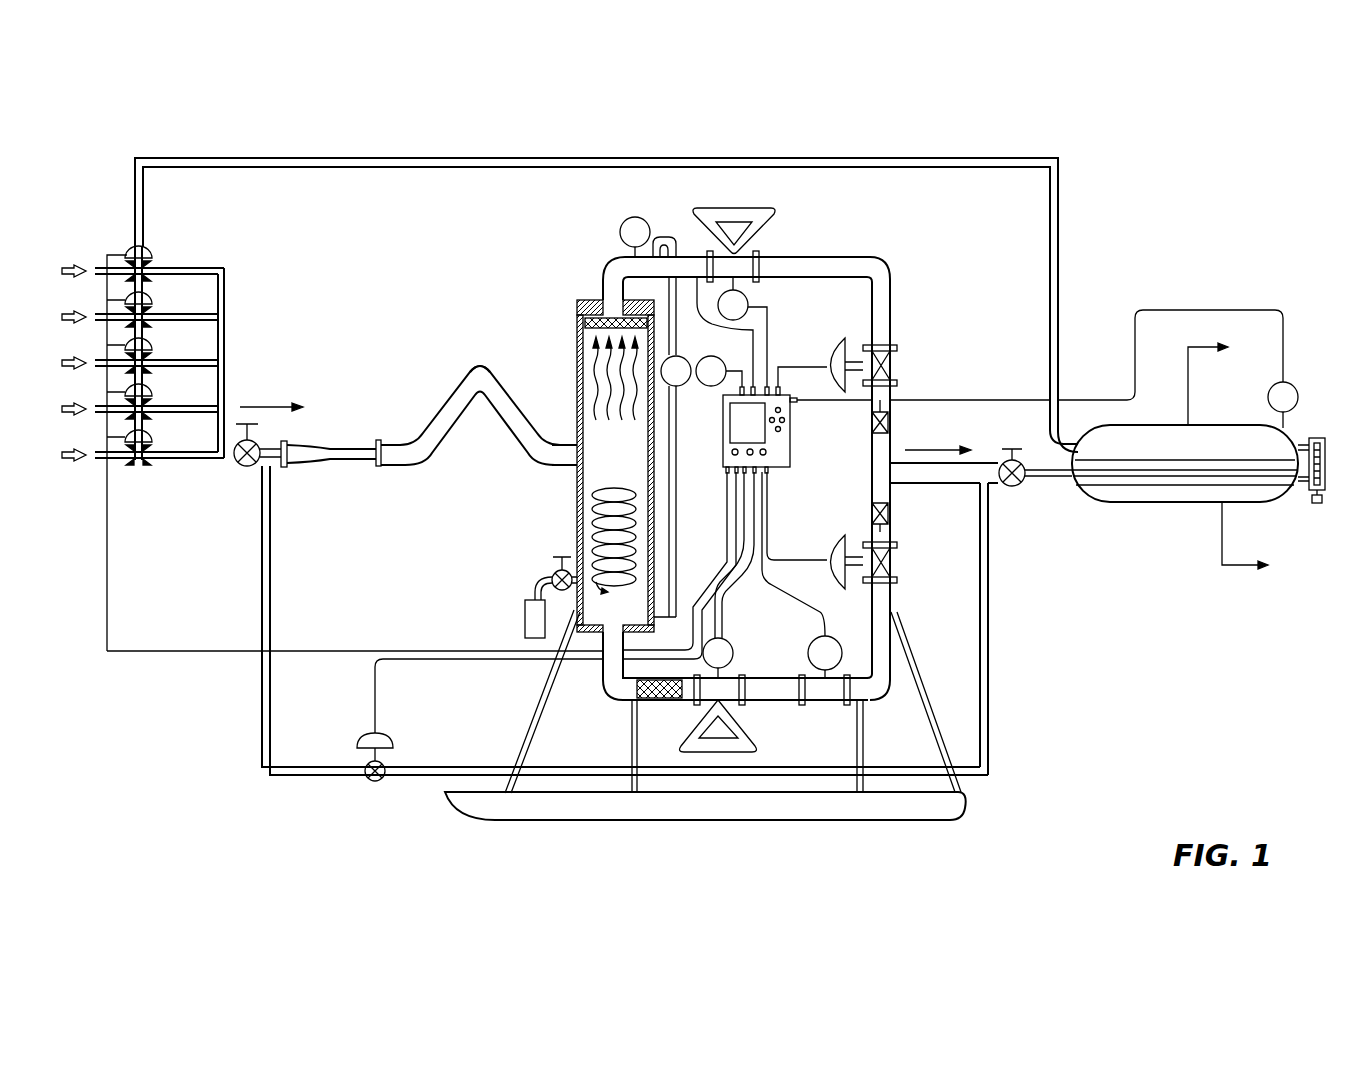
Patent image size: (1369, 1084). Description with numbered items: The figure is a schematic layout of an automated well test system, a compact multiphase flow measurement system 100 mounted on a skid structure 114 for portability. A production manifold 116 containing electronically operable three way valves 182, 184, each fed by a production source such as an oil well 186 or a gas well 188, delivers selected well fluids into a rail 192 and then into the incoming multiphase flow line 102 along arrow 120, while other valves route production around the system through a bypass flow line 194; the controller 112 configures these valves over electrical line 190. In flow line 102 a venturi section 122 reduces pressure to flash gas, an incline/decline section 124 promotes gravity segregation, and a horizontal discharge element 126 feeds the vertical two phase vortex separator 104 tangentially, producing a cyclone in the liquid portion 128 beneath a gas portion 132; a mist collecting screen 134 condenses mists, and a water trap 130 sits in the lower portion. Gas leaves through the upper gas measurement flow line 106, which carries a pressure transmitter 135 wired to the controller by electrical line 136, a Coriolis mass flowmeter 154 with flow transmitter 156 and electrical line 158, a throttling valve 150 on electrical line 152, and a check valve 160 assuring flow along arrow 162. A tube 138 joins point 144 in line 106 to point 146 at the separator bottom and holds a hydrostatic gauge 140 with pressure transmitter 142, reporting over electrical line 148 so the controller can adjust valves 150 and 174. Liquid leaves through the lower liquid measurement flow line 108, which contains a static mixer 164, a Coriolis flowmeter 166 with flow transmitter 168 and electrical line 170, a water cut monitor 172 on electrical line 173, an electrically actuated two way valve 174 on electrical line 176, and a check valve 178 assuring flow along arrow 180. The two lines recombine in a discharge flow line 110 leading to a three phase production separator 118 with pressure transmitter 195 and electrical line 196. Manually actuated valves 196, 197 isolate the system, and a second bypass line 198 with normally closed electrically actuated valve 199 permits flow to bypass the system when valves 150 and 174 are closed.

The compact multiphase flow measurement system 100 is at (905, 247).
The incoming multiphase flow line 102 is at (452, 380).
The vertical two phase vortex separator 104 is at (577, 340).
The upper gas measurement flow line 106 is at (812, 257).
The lower liquid measurement flow line 108 is at (891, 607).
The discharge flow line 110 is at (1010, 462).
The controller 112 is at (790, 455).
The skid structure 114 is at (450, 800).
The production manifold 116 is at (227, 272).
The three phase production separator 118 is at (1164, 425).
The arrow 120 is at (270, 407).
The venturi section 122 is at (330, 466).
The incline/decline section 124 is at (480, 366).
The horizontal discharge element 126 is at (572, 457).
The liquid portion 128 is at (587, 533).
The water trap 130 is at (525, 620).
The gas portion 132 is at (577, 362).
The mist collecting screen 134 is at (577, 302).
The pressure transmitter 135 is at (620, 232).
The electrical line 136 is at (665, 237).
The tube 138 is at (676, 470).
The hydrostatic gauge 140 is at (691, 353).
The pressure transmitter 142 is at (709, 386).
The point 144 is at (650, 258).
The point 146 is at (690, 608).
The electrical line 148 is at (740, 355).
The electrically operable throttling valve 150 is at (878, 345).
The electrical line 152 is at (815, 362).
The Coriolis mass flowmeter 154 is at (752, 215).
The flow transmitter 156 is at (746, 295).
The electrical line 158 is at (770, 308).
The check valve 160 is at (890, 422).
The arrow 162 is at (872, 402).
The static mixer 164 is at (655, 700).
The Coriolis flowmeter 166 is at (757, 728).
The flow transmitter 168 is at (733, 653).
The electrical line 170 is at (735, 625).
The water cut monitor 172 is at (835, 636).
The electrical line 173 is at (778, 582).
The electrically actuated two way valve 174 is at (838, 535).
The electrical line 176 is at (768, 505).
The check valve 178 is at (890, 513).
The arrow 180 is at (888, 532).
The three way valve 182 is at (152, 248).
The three way valve 184 is at (152, 298).
The oil well 186 is at (70, 266).
The gas well 188 is at (65, 320).
The electrical line 190 is at (408, 650).
The rail 192 is at (225, 328).
The bypass flow line 194 is at (455, 158).
The pressure transmitter 195 is at (1298, 395).
The manually actuated valve 196 is at (244, 466).
The manually actuated valve 197 is at (1015, 486).
The second bypass line 198 is at (320, 767).
The electrically actuated valve 199 is at (393, 742).